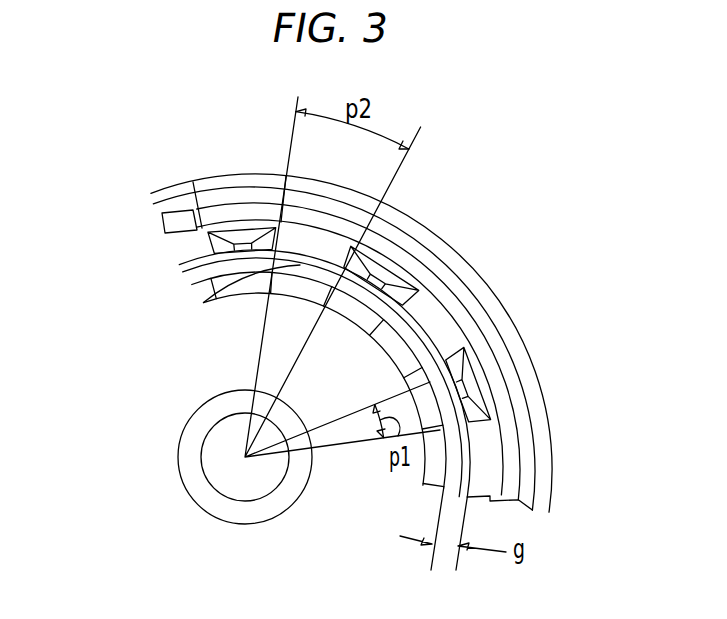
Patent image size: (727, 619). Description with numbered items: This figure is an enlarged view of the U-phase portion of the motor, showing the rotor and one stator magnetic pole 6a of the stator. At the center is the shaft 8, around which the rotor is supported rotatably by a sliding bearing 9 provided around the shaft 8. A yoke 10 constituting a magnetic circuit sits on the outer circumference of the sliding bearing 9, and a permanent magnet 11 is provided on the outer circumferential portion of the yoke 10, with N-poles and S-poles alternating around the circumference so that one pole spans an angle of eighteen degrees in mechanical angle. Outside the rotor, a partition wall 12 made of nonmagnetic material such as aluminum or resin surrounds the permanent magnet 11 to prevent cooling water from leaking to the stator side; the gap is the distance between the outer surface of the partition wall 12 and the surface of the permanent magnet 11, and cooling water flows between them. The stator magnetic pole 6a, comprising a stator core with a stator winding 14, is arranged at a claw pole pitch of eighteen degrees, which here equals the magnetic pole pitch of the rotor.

The stator magnetic pole 6a is at (522, 380).
The shaft 8 is at (218, 462).
The sliding bearing 9 is at (246, 512).
The yoke 10 is at (232, 352).
The permanent magnet 11 is at (210, 288).
The partition wall 12 is at (420, 325).
The stator winding 14 is at (162, 222).